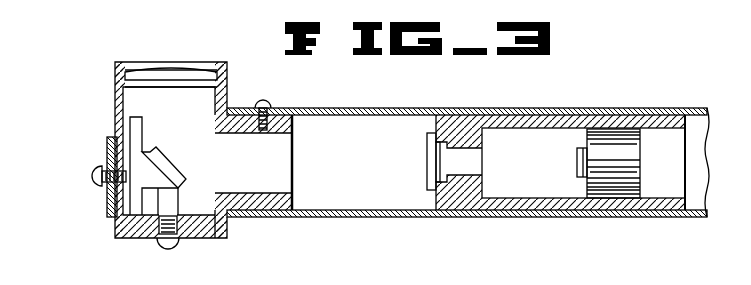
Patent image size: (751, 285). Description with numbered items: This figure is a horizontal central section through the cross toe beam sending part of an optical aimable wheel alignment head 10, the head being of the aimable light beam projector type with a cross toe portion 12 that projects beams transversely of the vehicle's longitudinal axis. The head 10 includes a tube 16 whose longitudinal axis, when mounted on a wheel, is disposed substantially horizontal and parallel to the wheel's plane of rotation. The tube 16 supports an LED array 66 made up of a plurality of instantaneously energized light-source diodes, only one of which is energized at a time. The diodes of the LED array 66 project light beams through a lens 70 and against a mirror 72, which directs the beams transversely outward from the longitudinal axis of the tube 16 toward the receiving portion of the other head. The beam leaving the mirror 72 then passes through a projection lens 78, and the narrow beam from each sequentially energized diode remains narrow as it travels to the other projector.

The optical aimable wheel alignment head 10 is at (657, 90).
The cross toe portion 12 is at (531, 107).
The tube 16 is at (366, 108).
The LED array 66 is at (577, 165).
The lens 70 is at (427, 163).
The mirror 72 is at (168, 160).
The projection lens 78 is at (162, 76).